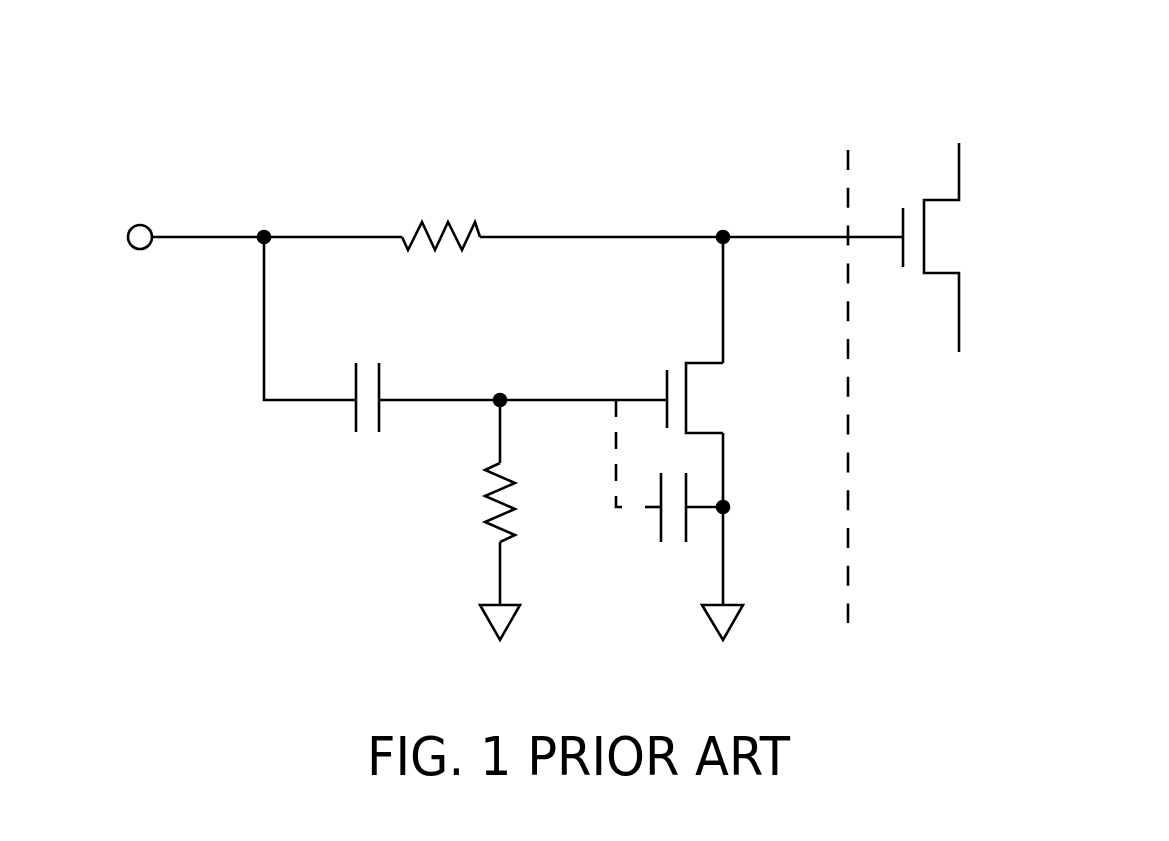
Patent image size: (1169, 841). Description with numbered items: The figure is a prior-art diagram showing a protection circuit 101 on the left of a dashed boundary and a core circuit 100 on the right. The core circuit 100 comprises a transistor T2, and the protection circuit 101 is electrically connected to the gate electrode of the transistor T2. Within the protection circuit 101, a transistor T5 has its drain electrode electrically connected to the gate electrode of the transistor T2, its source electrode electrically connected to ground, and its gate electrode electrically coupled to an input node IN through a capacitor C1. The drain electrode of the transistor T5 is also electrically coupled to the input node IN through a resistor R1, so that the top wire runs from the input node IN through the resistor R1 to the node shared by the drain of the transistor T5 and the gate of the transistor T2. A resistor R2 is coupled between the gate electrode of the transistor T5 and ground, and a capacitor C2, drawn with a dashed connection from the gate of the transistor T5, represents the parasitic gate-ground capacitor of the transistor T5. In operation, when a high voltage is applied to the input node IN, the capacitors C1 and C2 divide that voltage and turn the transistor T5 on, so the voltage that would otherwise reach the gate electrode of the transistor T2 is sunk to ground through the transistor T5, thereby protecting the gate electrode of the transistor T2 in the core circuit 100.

The core circuit 100 is at (1017, 148).
The protection circuit 101 is at (683, 160).
The input node IN is at (115, 236).
The resistor R1 is at (441, 215).
The resistor R2 is at (473, 502).
The capacitor C1 is at (361, 419).
The capacitor C2 is at (686, 529).
The transistor T5 is at (712, 402).
The transistor T2 is at (953, 241).